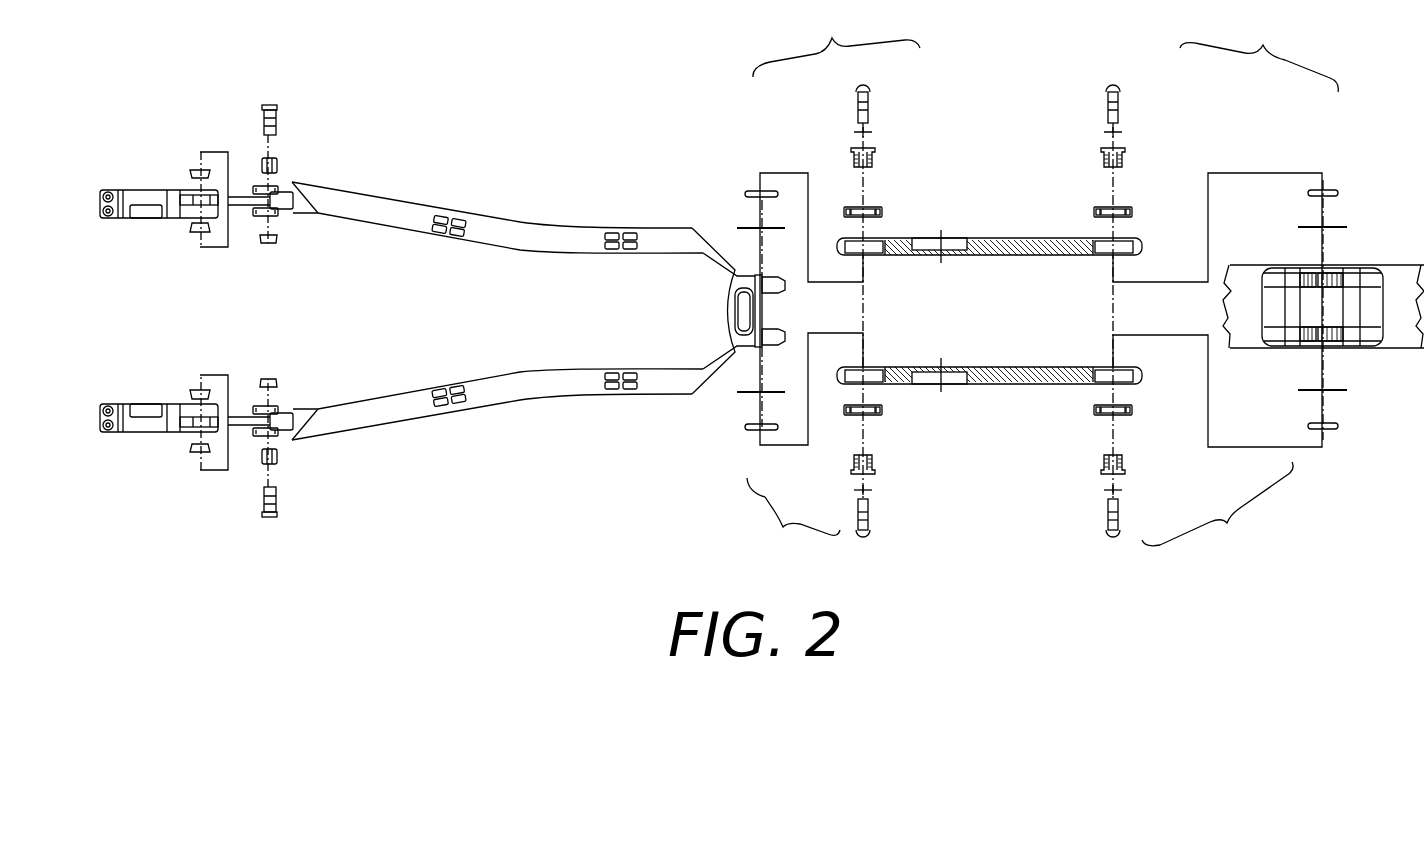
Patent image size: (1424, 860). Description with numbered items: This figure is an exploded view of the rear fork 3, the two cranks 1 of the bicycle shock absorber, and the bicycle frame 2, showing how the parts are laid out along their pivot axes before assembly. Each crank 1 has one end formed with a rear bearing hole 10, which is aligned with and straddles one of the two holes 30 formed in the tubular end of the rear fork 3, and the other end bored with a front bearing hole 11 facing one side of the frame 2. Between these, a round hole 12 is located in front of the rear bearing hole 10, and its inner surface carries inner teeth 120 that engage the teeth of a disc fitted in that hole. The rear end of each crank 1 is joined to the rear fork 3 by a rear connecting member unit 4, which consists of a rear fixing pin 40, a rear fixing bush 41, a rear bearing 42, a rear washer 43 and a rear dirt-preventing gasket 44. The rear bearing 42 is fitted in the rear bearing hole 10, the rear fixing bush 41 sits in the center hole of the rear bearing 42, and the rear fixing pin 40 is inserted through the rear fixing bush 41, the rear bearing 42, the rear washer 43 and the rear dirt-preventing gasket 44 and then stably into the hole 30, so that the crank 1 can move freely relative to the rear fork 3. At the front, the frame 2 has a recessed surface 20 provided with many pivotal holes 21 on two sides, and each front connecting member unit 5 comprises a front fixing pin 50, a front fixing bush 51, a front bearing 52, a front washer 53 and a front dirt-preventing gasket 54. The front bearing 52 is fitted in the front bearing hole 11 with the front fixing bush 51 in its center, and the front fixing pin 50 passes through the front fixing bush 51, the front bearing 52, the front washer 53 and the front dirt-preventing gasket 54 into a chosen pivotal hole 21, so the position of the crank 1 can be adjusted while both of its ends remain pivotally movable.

The crank 1 is at (1022, 250).
The bicycle frame 2 is at (1252, 327).
The rear fork 3 is at (531, 213).
The rear connecting member unit 4 is at (833, 283).
The front connecting member unit 5 is at (1240, 281).
The rear bearing hole 10 is at (870, 243).
The front bearing hole 11 is at (1122, 243).
The round hole 12 is at (950, 245).
The inner teeth 120 is at (922, 253).
The recessed surface 20 is at (1297, 272).
The pivotal hole 21 is at (1312, 343).
The hole 30 is at (757, 273).
The rear fixing pin 40 is at (868, 100).
The rear fixing bush 41 is at (875, 157).
The rear bearing 42 is at (880, 207).
The rear washer 43 is at (750, 190).
The rear dirt-preventing gasket 44 is at (791, 172).
The front fixing pin 50 is at (1113, 102).
The front fixing bush 51 is at (1127, 158).
The front bearing 52 is at (1130, 207).
The front washer 53 is at (1345, 180).
The front dirt-preventing gasket 54 is at (1345, 227).